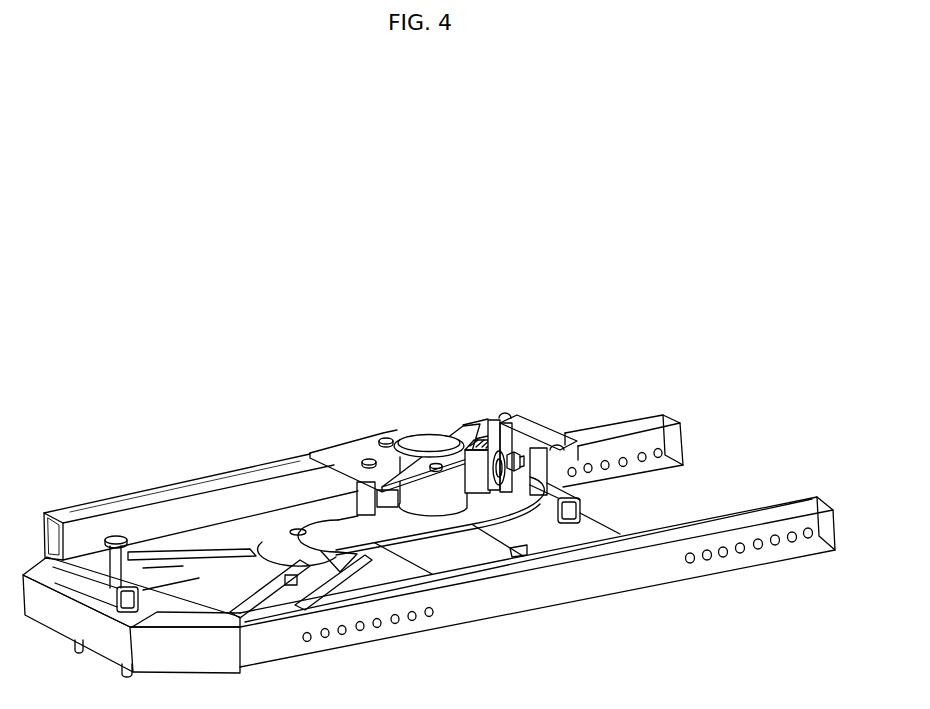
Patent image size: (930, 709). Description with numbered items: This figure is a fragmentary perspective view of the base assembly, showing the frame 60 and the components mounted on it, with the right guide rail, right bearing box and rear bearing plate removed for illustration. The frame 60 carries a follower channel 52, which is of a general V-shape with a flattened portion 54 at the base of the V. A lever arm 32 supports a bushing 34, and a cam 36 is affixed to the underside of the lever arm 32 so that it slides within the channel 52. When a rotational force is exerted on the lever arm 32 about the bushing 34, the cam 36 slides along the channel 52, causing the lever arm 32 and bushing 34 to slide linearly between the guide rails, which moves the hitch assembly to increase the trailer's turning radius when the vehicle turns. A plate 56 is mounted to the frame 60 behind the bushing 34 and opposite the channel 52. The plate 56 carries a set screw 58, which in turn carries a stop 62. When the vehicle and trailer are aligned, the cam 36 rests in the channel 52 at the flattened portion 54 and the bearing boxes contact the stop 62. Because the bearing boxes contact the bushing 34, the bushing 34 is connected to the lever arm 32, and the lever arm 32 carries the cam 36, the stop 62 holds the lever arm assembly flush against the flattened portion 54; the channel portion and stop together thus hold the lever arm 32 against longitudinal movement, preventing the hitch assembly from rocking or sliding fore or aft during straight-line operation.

The lever arm 32 is at (345, 520).
The bushing 34 is at (443, 437).
The cam 36 is at (308, 558).
The channel 52 is at (187, 521).
The flattened portion 54 is at (272, 557).
The plate 56 is at (522, 478).
The set screw 58 is at (510, 449).
The frame 60 is at (567, 582).
The stop 62 is at (493, 443).